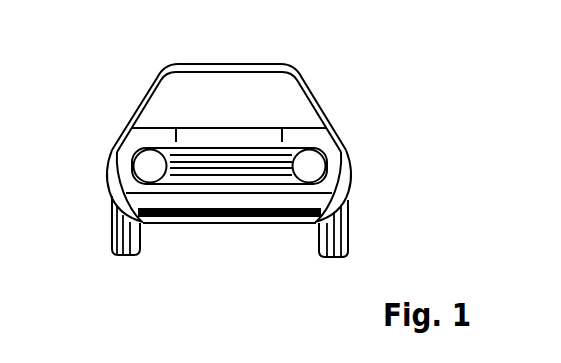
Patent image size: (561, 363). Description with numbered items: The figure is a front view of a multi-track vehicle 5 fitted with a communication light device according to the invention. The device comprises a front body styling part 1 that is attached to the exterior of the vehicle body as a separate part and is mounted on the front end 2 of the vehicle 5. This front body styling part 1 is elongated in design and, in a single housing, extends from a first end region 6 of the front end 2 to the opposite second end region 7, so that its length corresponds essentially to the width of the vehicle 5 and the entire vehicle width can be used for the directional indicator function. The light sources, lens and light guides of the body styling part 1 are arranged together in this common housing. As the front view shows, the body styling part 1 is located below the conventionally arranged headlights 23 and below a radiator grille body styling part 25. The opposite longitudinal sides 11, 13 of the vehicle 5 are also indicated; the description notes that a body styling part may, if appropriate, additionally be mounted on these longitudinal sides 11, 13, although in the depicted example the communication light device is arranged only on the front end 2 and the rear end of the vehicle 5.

The front body styling part 1 is at (288, 216).
The front end 2 is at (110, 153).
The vehicle 5 is at (358, 61).
The first end region 6 is at (351, 236).
The second end region 7 is at (136, 232).
The longitudinal side 11 is at (332, 118).
The longitudinal side 13 is at (122, 126).
The headlights 23 is at (310, 165).
The radiator grille body styling part 25 is at (210, 173).